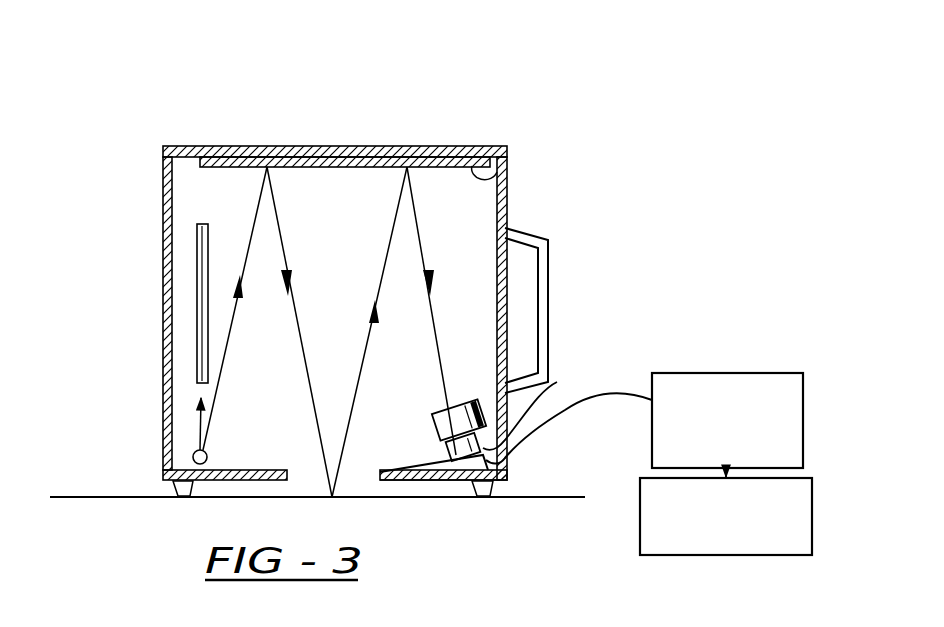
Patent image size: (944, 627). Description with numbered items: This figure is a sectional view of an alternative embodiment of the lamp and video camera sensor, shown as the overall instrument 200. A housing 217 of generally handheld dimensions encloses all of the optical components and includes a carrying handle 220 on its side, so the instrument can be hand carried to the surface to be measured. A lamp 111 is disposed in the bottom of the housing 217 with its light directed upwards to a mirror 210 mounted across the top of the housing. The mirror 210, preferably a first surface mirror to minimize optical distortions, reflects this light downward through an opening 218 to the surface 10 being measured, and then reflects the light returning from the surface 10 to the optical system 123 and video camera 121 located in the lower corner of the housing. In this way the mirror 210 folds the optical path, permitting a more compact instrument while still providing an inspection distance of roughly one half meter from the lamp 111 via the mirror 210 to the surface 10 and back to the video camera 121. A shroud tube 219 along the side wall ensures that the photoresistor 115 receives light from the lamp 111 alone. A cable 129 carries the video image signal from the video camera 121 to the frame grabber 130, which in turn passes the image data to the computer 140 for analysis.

The inspection system 200 is at (598, 100).
The mirror 210 is at (503, 180).
The housing 217 is at (163, 365).
The carrying handle 220 is at (547, 298).
The photoresistor 115 is at (197, 228).
The shroud tube 219 is at (197, 292).
The lamp 111 is at (192, 456).
The opening 218 is at (302, 465).
The surface 10 is at (360, 493).
The optical system 123 is at (468, 420).
The video camera 121 is at (521, 414).
The cable 129 is at (560, 413).
The frame grabber 130 is at (727, 425).
The computer 140 is at (726, 516).